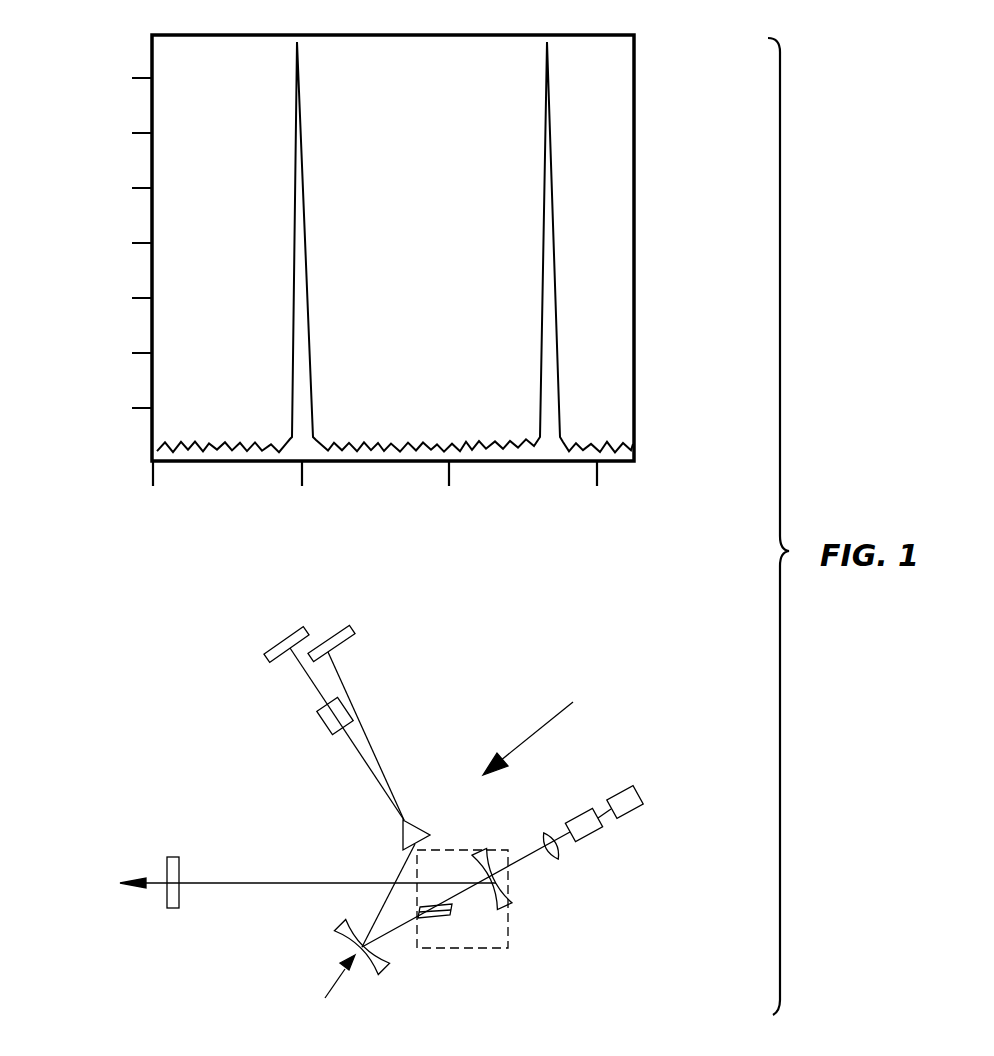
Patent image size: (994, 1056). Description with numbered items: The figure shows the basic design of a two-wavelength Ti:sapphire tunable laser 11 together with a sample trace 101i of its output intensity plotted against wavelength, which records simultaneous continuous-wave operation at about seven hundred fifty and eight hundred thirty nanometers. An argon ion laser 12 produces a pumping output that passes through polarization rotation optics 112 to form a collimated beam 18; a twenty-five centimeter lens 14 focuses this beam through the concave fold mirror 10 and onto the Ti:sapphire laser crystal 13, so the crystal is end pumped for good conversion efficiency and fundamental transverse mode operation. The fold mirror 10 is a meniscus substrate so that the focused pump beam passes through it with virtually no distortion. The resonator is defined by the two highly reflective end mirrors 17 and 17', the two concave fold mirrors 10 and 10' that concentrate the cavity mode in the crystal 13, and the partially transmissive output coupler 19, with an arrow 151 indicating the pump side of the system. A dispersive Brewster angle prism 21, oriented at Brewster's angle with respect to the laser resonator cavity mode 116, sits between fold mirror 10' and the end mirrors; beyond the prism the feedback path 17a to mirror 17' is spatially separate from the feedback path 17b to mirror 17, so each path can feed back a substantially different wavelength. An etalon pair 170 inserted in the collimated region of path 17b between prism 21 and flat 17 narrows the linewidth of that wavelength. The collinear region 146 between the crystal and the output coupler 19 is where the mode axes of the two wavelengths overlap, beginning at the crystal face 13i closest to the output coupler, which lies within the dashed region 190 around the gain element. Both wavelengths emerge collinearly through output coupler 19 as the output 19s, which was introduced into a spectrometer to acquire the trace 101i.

The sample trace 101i is at (634, 238).
The end reflective mirror 17 is at (275, 632).
The end reflective mirror 17' is at (325, 625).
The feedback path 17a is at (342, 683).
The feedback path 17b is at (355, 747).
The etalon pair 170 is at (318, 716).
The dispersive Brewster angle prism 21 is at (423, 818).
The laser resonator cavity mode 116 is at (400, 870).
The laser crystal 13 is at (440, 890).
The crystal face 13i is at (450, 918).
The laser cavity enclosure 190 is at (510, 940).
The collimated beam 18 is at (531, 856).
The concave fold mirror 10 is at (513, 886).
The concave fold mirror 10' is at (380, 970).
The tunable laser 11 is at (330, 991).
The lens 14 is at (558, 860).
The polarization rotation optics 112 is at (595, 843).
The argon ion laser 12 is at (630, 815).
The laser system 151 is at (549, 724).
The output beam 146 is at (255, 885).
The output coupler 19 is at (170, 857).
The filtered output beam 19s is at (115, 887).